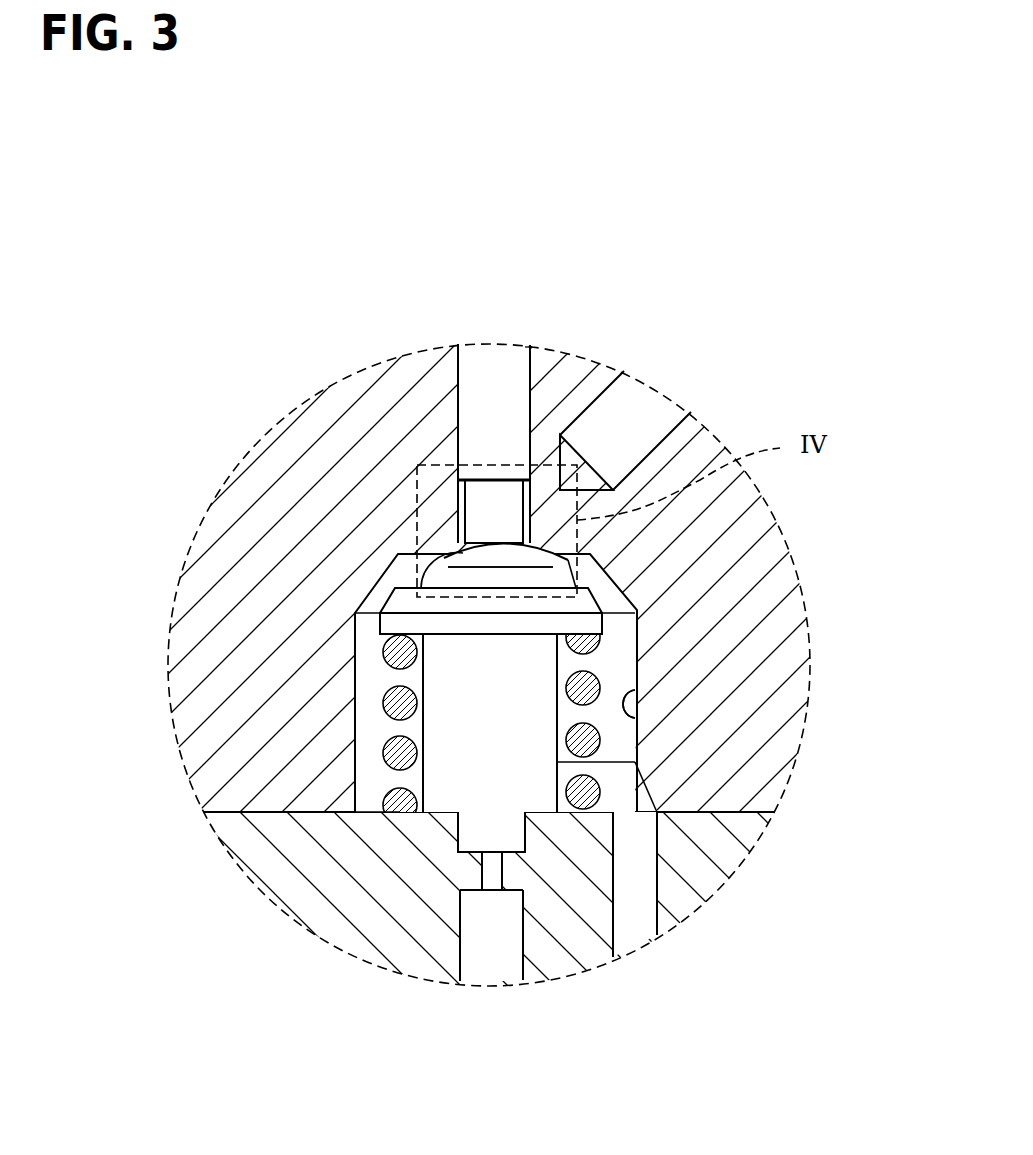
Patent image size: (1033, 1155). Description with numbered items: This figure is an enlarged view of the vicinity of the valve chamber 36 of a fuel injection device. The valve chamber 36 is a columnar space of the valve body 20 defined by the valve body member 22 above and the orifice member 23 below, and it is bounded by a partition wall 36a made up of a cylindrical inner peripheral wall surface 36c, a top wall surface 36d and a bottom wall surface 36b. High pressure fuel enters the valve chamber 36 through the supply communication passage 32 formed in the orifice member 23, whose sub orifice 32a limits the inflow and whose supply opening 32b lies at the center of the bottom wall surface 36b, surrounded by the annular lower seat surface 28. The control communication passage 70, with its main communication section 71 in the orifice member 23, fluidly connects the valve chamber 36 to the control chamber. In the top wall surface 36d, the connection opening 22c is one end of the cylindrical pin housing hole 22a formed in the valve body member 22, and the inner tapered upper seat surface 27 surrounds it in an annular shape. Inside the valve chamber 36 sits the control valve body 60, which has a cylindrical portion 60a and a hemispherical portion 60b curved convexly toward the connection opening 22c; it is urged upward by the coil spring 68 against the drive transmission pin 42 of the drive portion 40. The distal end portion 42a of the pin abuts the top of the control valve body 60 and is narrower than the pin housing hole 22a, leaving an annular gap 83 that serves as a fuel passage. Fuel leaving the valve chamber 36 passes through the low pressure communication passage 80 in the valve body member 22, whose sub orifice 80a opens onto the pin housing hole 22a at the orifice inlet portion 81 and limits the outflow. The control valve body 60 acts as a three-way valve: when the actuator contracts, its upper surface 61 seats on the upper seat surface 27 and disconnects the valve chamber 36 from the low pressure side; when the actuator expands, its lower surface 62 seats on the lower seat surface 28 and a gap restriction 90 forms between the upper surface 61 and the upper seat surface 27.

The valve body 20 is at (312, 415).
The valve body member 22 is at (358, 379).
The pin housing hole 22a is at (530, 347).
The connection opening 22c is at (458, 546).
The orifice member 23 is at (738, 862).
The upper seat surface 27 is at (420, 588).
The lower seat surface 28 is at (532, 812).
The supply communication passage 32 is at (476, 970).
The sub orifice 32a is at (497, 885).
The supply opening 32b is at (458, 812).
The valve chamber 36 is at (617, 668).
The partition wall 36a is at (637, 717).
The bottom wall surface 36b is at (387, 813).
The inner peripheral wall surface 36c is at (637, 717).
The top wall surface 36d is at (538, 550).
The drive portion 40 is at (468, 370).
The drive transmission pin 42 is at (468, 370).
The distal end portion 42a is at (530, 487).
The control valve body 60 is at (379, 624).
The cylindrical portion 60a is at (635, 762).
The hemispherical portion 60b is at (425, 578).
The upper surface 61 is at (445, 560).
The lower surface 62 is at (543, 812).
The coil spring 68 is at (597, 810).
The control communication passage 70 is at (640, 898).
The main communication section 71 is at (640, 898).
The low pressure communication passage 80 is at (673, 418).
The sub orifice 80a is at (568, 465).
The orifice inlet portion 81 is at (523, 512).
The annular gap 83 is at (458, 513).
The gap restriction 90 is at (605, 567).